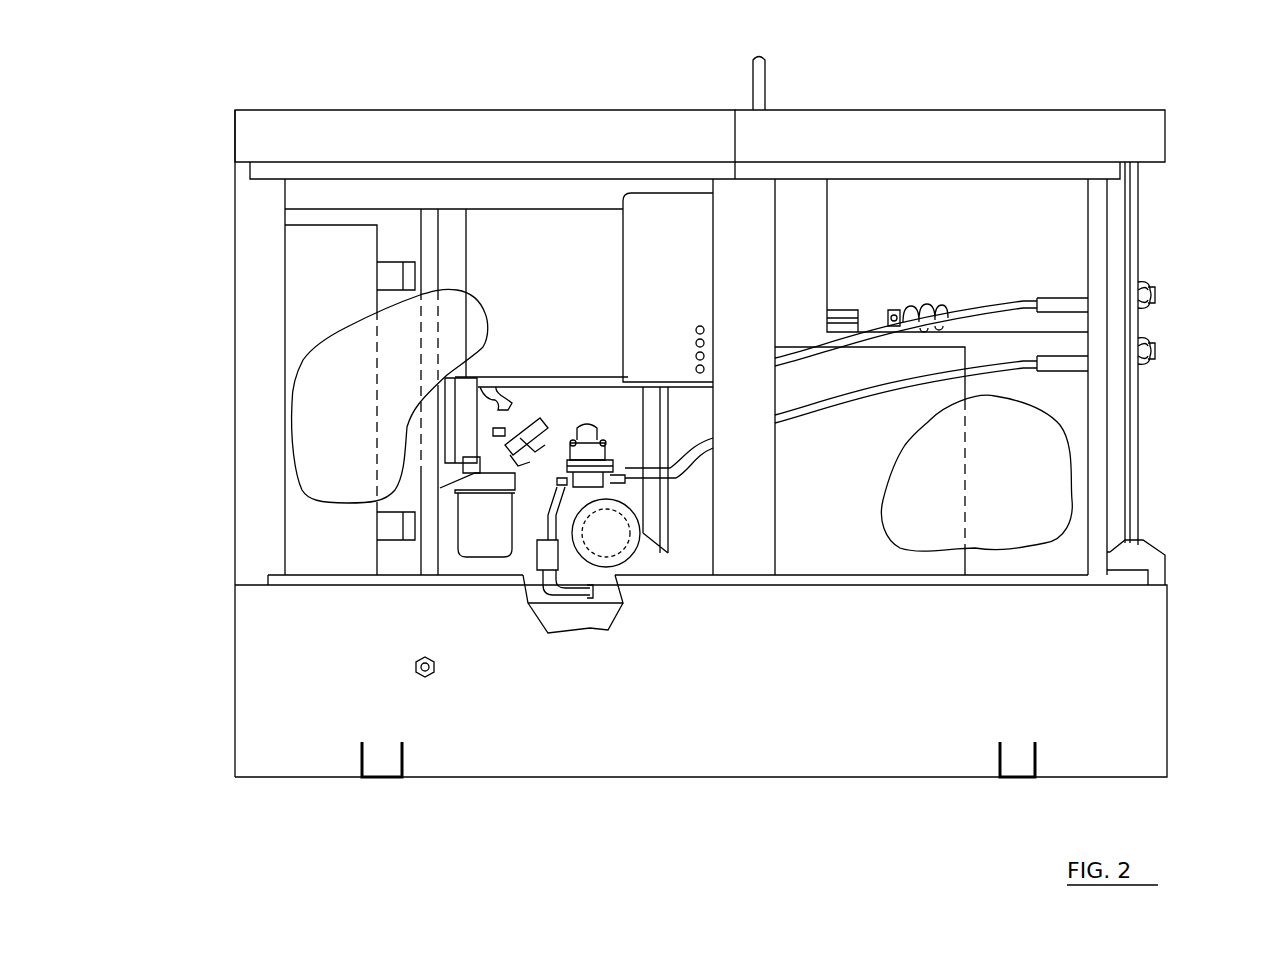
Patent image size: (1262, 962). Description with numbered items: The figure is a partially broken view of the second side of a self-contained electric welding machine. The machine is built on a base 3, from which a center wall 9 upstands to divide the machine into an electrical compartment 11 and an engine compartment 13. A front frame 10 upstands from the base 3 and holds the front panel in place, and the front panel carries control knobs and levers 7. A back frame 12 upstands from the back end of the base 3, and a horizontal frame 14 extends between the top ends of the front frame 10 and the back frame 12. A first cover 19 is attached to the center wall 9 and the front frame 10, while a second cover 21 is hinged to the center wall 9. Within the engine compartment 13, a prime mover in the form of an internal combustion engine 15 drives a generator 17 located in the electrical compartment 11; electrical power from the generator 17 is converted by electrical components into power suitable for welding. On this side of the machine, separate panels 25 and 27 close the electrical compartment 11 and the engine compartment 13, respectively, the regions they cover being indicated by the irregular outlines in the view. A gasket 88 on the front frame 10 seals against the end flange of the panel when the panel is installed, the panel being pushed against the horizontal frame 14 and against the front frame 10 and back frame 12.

The base 3 is at (846, 789).
The control knobs and levers 7 is at (1155, 295).
The center wall 9 is at (749, 381).
The front frame 10 is at (1118, 518).
The electrical compartment 11 is at (973, 253).
The back frame 12 is at (245, 463).
The engine compartment 13 is at (598, 301).
The horizontal frame 14 is at (473, 170).
The internal combustion engine 15 is at (553, 438).
The generator 17 is at (848, 471).
The first cover 19 is at (917, 137).
The second cover 21 is at (575, 135).
The panel 25 is at (1017, 471).
The panel 27 is at (369, 418).
The gasket 88 is at (1137, 455).